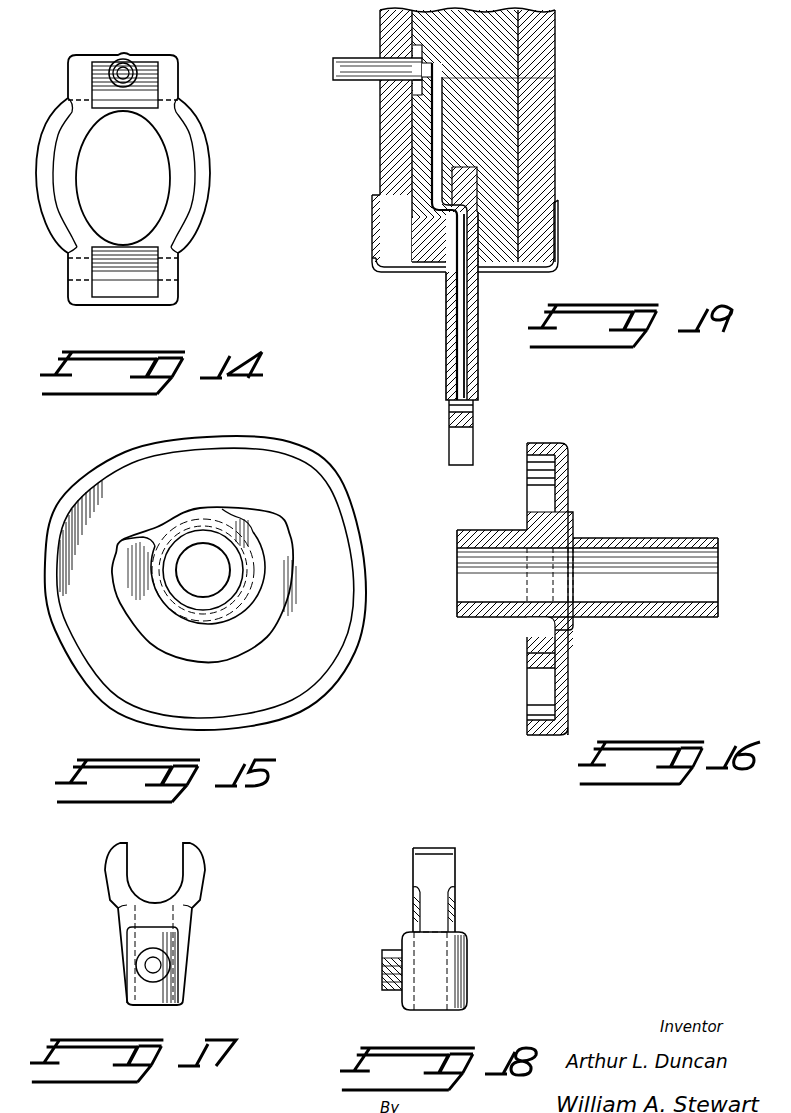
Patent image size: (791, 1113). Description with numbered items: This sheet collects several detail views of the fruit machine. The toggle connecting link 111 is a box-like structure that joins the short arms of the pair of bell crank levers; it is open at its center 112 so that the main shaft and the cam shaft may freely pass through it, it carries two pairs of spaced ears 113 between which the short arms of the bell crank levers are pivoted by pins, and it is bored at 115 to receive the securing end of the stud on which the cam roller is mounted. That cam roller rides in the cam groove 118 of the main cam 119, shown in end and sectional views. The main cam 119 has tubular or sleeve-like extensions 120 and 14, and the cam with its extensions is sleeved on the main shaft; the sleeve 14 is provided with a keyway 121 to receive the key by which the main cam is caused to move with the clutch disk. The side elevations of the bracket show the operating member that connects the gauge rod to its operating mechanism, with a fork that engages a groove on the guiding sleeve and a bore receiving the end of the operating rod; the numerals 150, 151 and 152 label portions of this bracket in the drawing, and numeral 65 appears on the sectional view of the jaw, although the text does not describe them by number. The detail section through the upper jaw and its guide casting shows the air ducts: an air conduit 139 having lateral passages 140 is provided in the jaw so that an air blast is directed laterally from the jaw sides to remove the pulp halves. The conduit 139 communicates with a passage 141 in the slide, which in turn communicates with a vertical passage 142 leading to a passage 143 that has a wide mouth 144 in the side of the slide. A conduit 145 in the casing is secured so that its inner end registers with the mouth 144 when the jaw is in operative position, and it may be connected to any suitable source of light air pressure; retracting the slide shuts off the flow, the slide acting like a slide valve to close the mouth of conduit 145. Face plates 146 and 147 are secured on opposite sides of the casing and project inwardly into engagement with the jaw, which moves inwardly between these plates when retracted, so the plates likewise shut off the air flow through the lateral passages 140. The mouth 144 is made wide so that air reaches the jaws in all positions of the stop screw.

In FIG. 16, the sleeve 14 is at (662, 543).
In FIG. 19, the stem passage 65 is at (478, 343).
In FIG. 14, the link 111 is at (187, 232).
In FIG. 14, the center opening 112 is at (130, 205).
In FIG. 14, the spaced ears 113 is at (160, 285).
In FIG. 14, the bore 115 is at (140, 76).
In FIG. 15, the cam groove 118 is at (297, 657).
In FIG. 16, the cam groove 118 is at (532, 707).
In FIG. 15, the main cam 119 is at (346, 542).
In FIG. 16, the sleeve extension 120 is at (490, 510).
In FIG. 16, the keyway 121 is at (657, 612).
In FIG. 19, the air conduit 139 is at (463, 316).
In FIG. 19, the lateral passages 140 is at (453, 410).
In FIG. 19, the passage 141 is at (437, 218).
In FIG. 19, the vertical passage 142 is at (438, 145).
In FIG. 19, the passage 143 is at (555, 78).
In FIG. 19, the wide mouth 144 is at (395, 82).
In FIG. 19, the conduit 145 is at (340, 76).
In FIG. 19, the face plate 146 is at (445, 296).
In FIG. 19, the face plate 147 is at (558, 257).
In FIG. 17, the fork 150 is at (193, 880).
In FIG. 17, the insert 151 is at (185, 940).
In FIG. 18, the insert 151 is at (472, 955).
In FIG. 18, the blade 152 is at (437, 988).